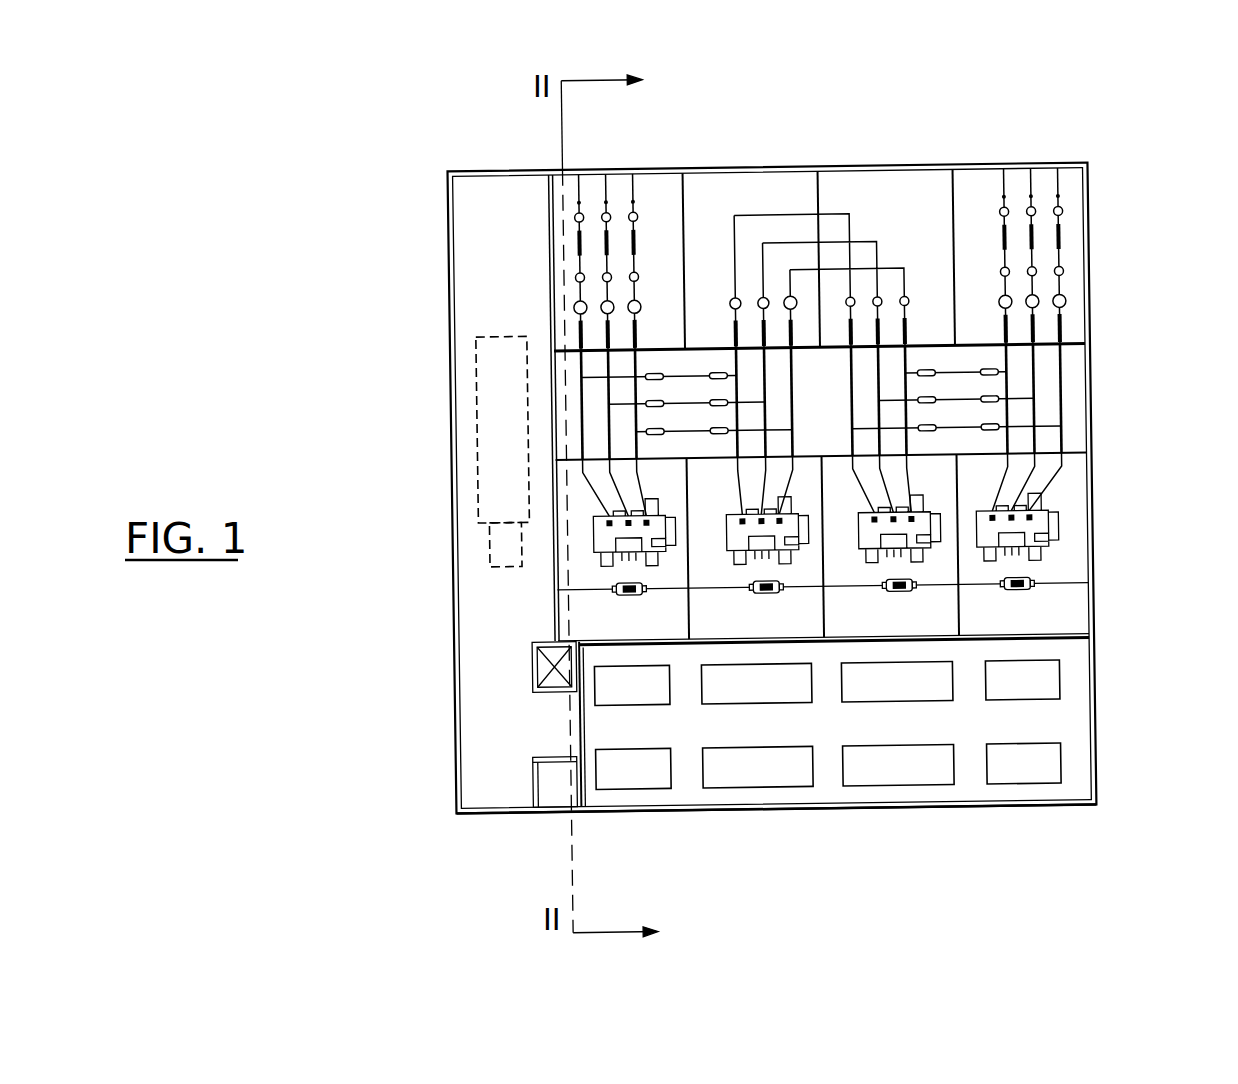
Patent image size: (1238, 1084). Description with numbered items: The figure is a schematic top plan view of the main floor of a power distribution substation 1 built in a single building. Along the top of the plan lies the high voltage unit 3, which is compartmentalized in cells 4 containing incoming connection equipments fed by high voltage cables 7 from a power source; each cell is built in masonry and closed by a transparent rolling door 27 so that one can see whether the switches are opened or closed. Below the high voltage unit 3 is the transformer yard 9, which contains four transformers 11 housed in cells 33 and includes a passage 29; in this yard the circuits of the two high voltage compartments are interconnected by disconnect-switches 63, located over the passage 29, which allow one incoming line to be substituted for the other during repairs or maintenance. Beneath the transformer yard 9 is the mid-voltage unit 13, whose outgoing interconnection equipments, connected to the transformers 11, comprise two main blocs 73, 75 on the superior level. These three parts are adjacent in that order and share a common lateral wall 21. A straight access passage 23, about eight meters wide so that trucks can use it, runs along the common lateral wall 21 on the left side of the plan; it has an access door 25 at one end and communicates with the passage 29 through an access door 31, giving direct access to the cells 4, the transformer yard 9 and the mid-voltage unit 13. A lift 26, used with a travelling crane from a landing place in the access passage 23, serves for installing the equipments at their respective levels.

The power distribution substation 1 is at (1114, 316).
The high voltage unit 3 is at (1070, 231).
The cells 4 is at (738, 187).
The high voltage cables 7 is at (633, 166).
The transformer yard 9 is at (1084, 477).
The transformers 11 is at (735, 533).
The mid-voltage unit 13 is at (1066, 732).
The common lateral wall 21 is at (553, 325).
The access passage 23 is at (480, 738).
The access door 25 is at (513, 815).
The lift 26 is at (535, 662).
The transparent rolling door 27 is at (665, 345).
The passage 29 is at (1078, 364).
The access door 31 is at (553, 403).
The cells 33 is at (618, 632).
The disconnect-switches 63 is at (656, 434).
The main bloc 73 is at (1165, 695).
The main bloc 75 is at (635, 783).